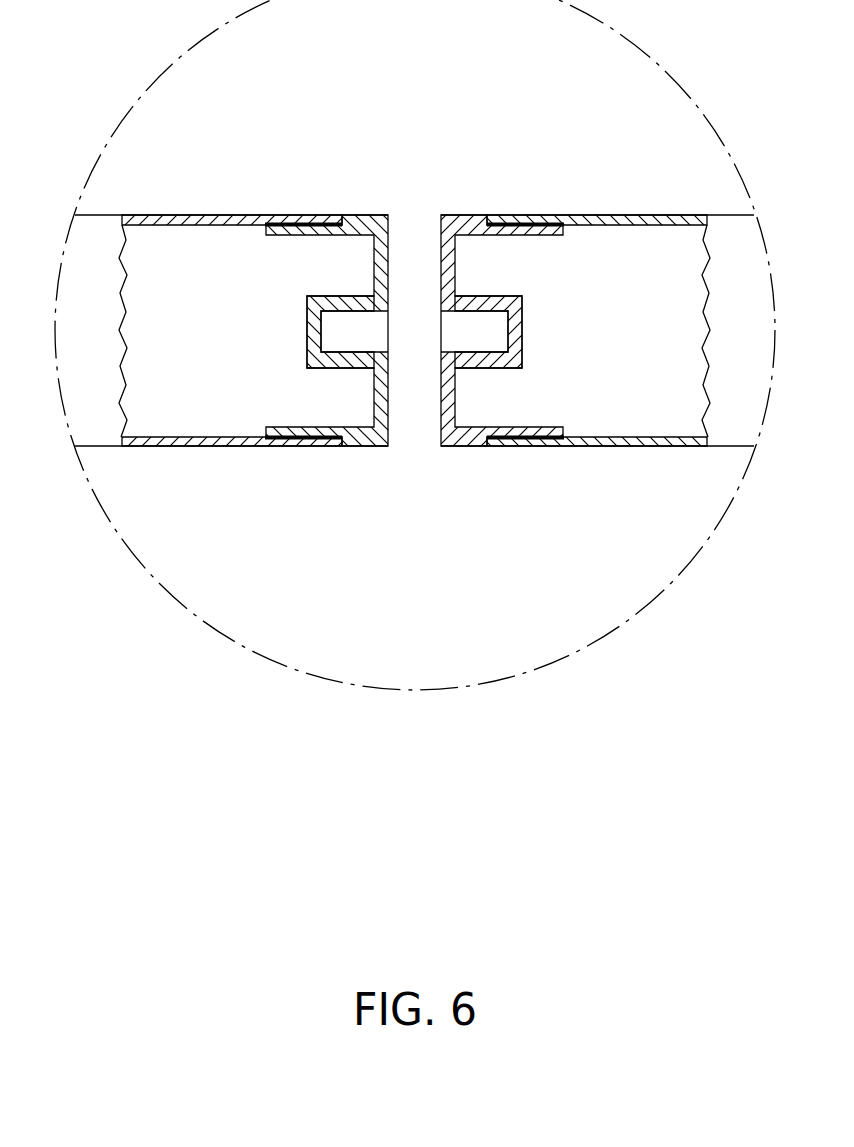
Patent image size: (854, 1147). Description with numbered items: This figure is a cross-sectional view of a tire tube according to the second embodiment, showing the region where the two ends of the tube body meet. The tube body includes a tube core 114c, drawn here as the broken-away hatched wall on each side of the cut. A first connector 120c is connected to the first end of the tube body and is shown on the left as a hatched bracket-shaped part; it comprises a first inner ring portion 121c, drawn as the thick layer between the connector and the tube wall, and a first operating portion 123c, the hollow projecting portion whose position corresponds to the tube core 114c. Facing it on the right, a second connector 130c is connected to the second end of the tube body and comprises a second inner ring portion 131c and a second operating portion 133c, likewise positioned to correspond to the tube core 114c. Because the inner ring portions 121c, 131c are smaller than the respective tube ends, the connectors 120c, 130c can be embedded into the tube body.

The tube core 114c is at (134, 342).
The first connector 120c is at (339, 201).
The first inner ring portion 121c is at (275, 250).
The first operating portion 123c is at (310, 343).
The second connector 130c is at (468, 201).
The second inner ring portion 131c is at (562, 247).
The second operating portion 133c is at (535, 349).